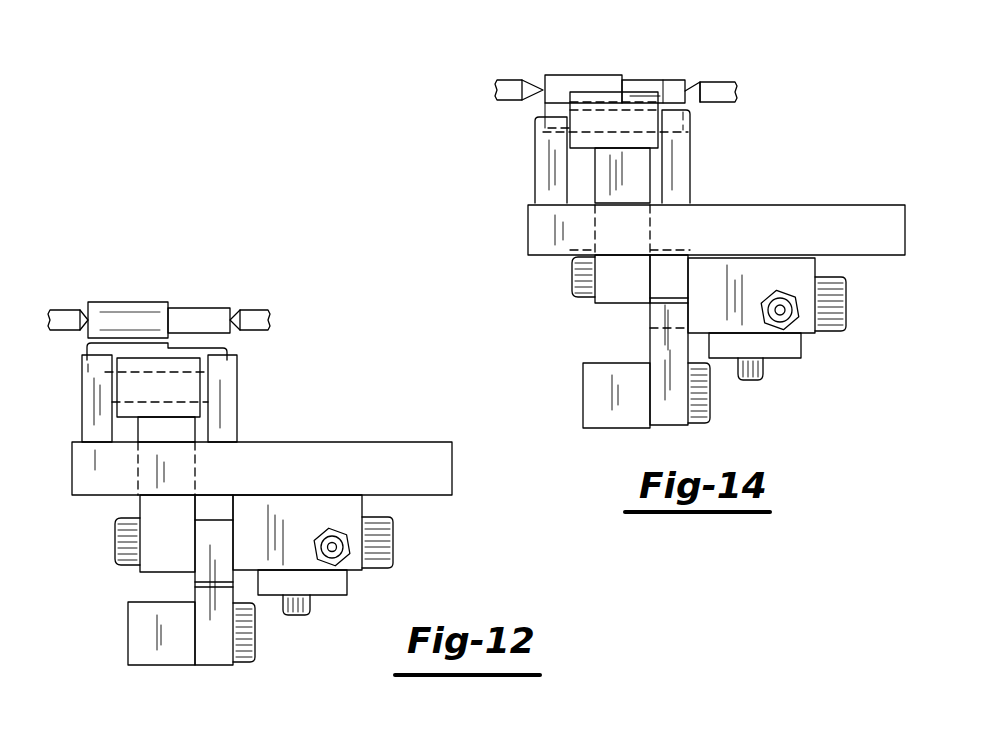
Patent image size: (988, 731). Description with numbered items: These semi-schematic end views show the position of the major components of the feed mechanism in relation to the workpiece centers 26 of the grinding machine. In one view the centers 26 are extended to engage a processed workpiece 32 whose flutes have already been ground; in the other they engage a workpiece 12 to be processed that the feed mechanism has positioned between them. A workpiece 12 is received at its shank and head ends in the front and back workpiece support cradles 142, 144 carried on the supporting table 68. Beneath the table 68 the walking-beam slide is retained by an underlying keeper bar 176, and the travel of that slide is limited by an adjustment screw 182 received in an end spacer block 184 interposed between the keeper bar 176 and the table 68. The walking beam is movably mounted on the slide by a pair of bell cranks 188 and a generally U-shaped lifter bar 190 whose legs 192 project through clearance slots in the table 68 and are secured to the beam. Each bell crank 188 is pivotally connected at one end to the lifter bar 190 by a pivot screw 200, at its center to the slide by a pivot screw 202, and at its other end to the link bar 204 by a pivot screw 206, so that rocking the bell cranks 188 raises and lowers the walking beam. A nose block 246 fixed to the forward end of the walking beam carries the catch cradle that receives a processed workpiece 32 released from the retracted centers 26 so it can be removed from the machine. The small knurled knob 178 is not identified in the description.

In FIG. 12, the workpiece 12 is at (126, 300).
In FIG. 14, the workpiece 12 is at (563, 76).
In FIG. 12, the centers 26 is at (64, 308).
In FIG. 14, the centers 26 is at (508, 80).
In FIG. 14, the processed workpiece 32 is at (540, 105).
In FIG. 12, the table 68 is at (72, 458).
In FIG. 14, the table 68 is at (528, 230).
In FIG. 12, the front workpiece support cradle 142 is at (240, 379).
In FIG. 14, the front workpiece support cradle 142 is at (692, 144).
In FIG. 12, the back workpiece support cradle 144 is at (84, 418).
In FIG. 14, the back workpiece support cradle 144 is at (542, 152).
In FIG. 12, the keeper bar 176 is at (345, 590).
In FIG. 14, the keeper bar 176 is at (788, 360).
In FIG. 12, the lower adjusting knob 178 is at (300, 620).
In FIG. 14, the lower adjusting knob 178 is at (745, 383).
In FIG. 12, the adjustment screw 182 is at (342, 555).
In FIG. 14, the adjustment screw 182 is at (788, 322).
In FIG. 14, the end spacer block 184 is at (820, 336).
In FIG. 12, the bell crank 188 is at (218, 658).
In FIG. 14, the bell crank 188 is at (652, 336).
In FIG. 12, the lifter bar 190 is at (140, 572).
In FIG. 14, the lifter bar 190 is at (596, 304).
In FIG. 14, the legs 192 is at (598, 182).
In FIG. 12, the pivot screw 200 is at (118, 556).
In FIG. 14, the pivot screw 200 is at (572, 286).
In FIG. 12, the pivot screw 202 is at (383, 540).
In FIG. 14, the pivot screw 202 is at (849, 306).
In FIG. 12, the link bar 204 is at (130, 660).
In FIG. 14, the link bar 204 is at (588, 415).
In FIG. 12, the pivot screw 206 is at (256, 660).
In FIG. 14, the pivot screw 206 is at (696, 427).
In FIG. 12, the nose block 246 is at (188, 412).
In FIG. 14, the nose block 246 is at (655, 148).